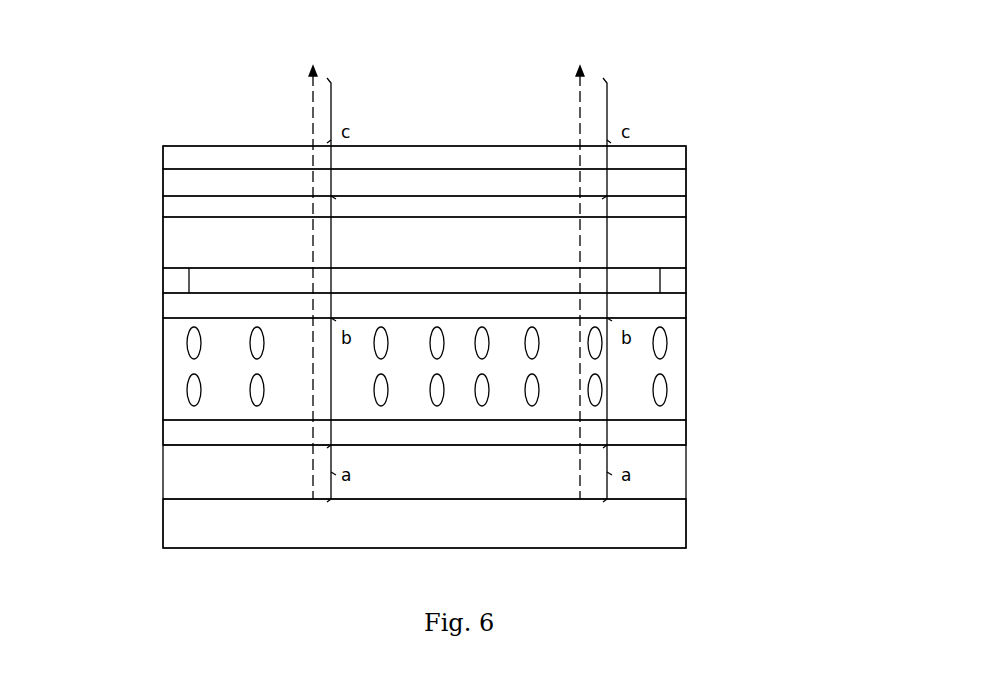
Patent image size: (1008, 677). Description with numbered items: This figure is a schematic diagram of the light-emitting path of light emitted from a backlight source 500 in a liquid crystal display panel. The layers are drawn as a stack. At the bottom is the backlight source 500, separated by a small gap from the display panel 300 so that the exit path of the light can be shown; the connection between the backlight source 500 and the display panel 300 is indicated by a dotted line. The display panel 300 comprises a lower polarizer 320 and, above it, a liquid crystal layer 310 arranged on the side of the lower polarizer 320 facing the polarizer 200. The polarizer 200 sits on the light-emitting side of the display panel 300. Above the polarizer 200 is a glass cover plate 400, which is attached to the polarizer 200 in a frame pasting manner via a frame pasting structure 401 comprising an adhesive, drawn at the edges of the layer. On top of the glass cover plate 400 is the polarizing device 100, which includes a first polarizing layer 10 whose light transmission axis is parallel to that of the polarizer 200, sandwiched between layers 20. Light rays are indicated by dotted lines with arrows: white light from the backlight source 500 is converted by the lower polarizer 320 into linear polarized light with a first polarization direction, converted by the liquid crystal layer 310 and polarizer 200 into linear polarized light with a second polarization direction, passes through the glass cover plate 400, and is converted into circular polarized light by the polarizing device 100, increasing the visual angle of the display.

The first polarizing layer 10 is at (686, 180).
The second polarizing layer 20 is at (686, 153).
The polarizing device 100 is at (492, 176).
The polarizer 200 is at (686, 305).
The display panel 300 is at (510, 386).
The liquid crystal layer 310 is at (686, 368).
The lower polarizer 320 is at (686, 433).
The glass cover plate 400 is at (163, 246).
The frame pasting structure 401 is at (163, 283).
The backlight source 500 is at (686, 523).